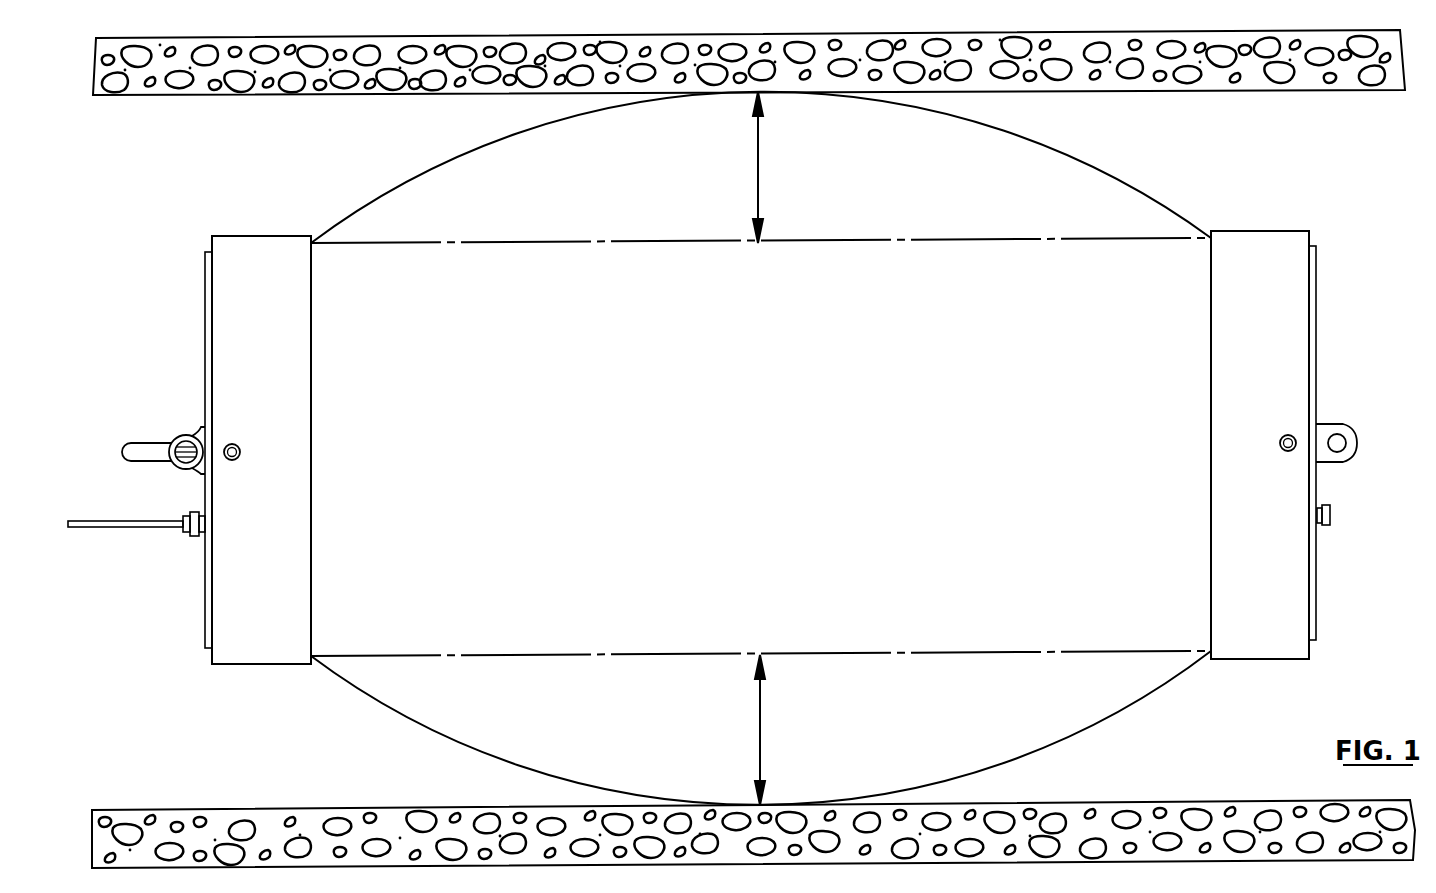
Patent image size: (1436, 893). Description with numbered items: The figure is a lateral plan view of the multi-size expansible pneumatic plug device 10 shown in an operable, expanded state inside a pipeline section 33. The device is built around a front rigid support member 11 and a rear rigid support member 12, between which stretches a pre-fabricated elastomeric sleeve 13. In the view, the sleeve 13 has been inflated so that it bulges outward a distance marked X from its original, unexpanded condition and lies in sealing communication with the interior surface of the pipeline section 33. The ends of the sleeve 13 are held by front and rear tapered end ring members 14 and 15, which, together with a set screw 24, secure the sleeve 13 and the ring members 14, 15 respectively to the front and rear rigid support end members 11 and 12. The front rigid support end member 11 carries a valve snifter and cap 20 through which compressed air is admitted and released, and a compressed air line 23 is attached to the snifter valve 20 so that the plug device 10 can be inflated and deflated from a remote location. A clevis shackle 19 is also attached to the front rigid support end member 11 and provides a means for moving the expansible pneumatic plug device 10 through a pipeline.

The multi-size expansible pneumatic plug device 10 is at (741, 448).
The front rigid support member 11 is at (205, 298).
The rear rigid support member 12 is at (1316, 328).
The pre-fabricated elastomeric sleeve 13 is at (431, 170).
The front tapered end ring member 14 is at (259, 247).
The rear tapered end ring member 15 is at (1283, 238).
The clevis shackle 19 is at (130, 460).
The valve snifter and cap 20 is at (200, 533).
The compressed air line 23 is at (95, 528).
The set screw 24 is at (232, 444).
The pipeline section 33 is at (1258, 82).